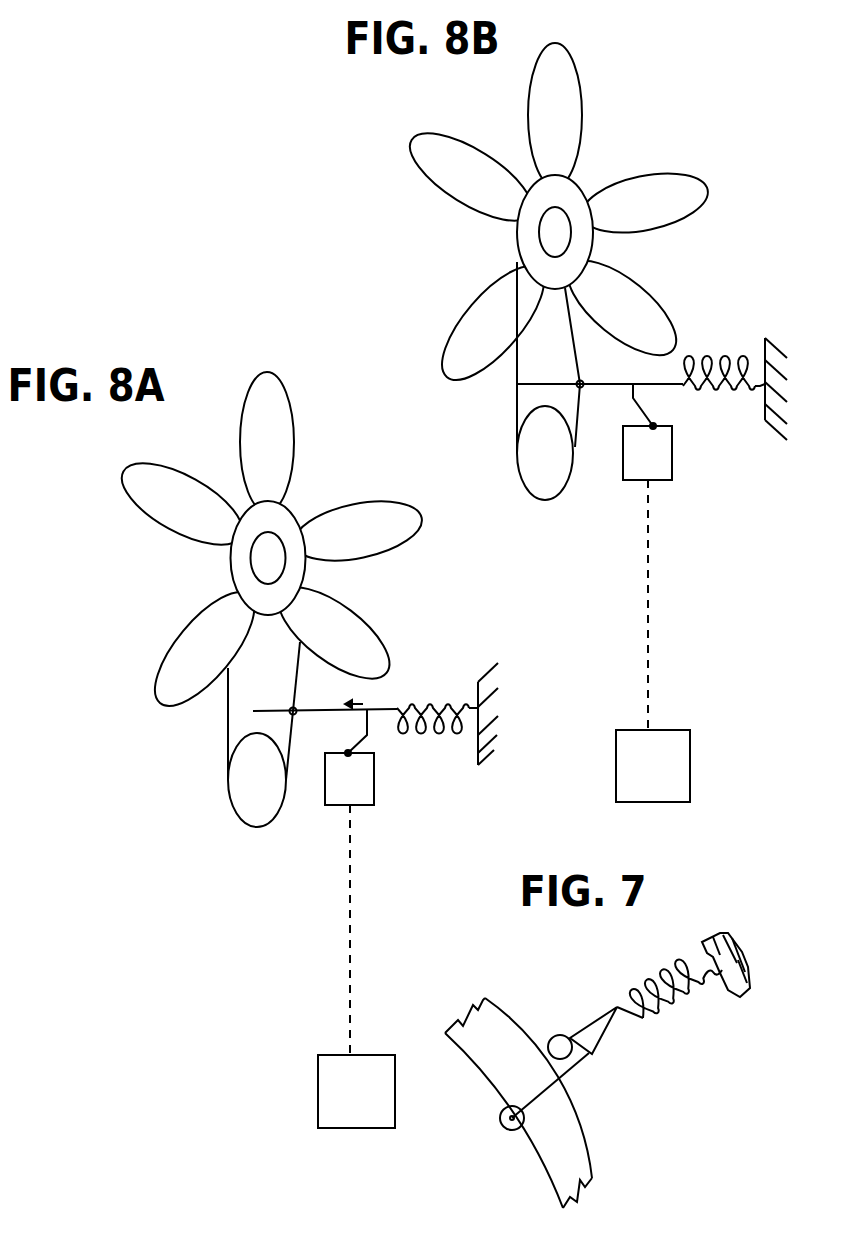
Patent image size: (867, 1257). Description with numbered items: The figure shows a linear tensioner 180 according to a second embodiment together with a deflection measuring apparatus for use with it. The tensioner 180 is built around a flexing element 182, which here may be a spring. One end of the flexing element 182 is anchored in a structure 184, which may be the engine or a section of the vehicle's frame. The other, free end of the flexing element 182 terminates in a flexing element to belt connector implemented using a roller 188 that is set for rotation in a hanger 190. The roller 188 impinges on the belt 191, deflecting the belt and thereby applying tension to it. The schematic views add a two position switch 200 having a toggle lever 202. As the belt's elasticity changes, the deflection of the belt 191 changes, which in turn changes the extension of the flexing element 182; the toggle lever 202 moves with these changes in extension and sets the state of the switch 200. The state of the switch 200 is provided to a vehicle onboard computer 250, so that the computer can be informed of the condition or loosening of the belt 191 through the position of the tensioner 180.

In FIG. 7, the linear tensioner 180 is at (672, 1045).
In FIG. 8B, the flexing element 182 is at (726, 364).
In FIG. 8A, the flexing element 182 is at (409, 703).
In FIG. 7, the flexing element 182 is at (673, 975).
In FIG. 8B, the structure 184 is at (777, 340).
In FIG. 8A, the structure 184 is at (492, 672).
In FIG. 7, the structure 184 is at (750, 952).
In FIG. 8B, the roller 188 is at (517, 384).
In FIG. 8A, the roller 188 is at (253, 711).
In FIG. 7, the roller 188 is at (500, 1108).
In FIG. 7, the hanger 190 is at (589, 1057).
In FIG. 8B, the belt 191 is at (517, 403).
In FIG. 8A, the belt 191 is at (298, 680).
In FIG. 7, the belt 191 is at (513, 1030).
In FIG. 8B, the two position switch 200 is at (672, 460).
In FIG. 8A, the two position switch 200 is at (374, 792).
In FIG. 8B, the toggle lever 202 is at (633, 398).
In FIG. 8A, the toggle lever 202 is at (367, 735).
In FIG. 8B, the vehicle onboard computer 250 is at (690, 772).
In FIG. 8A, the vehicle onboard computer 250 is at (395, 1110).